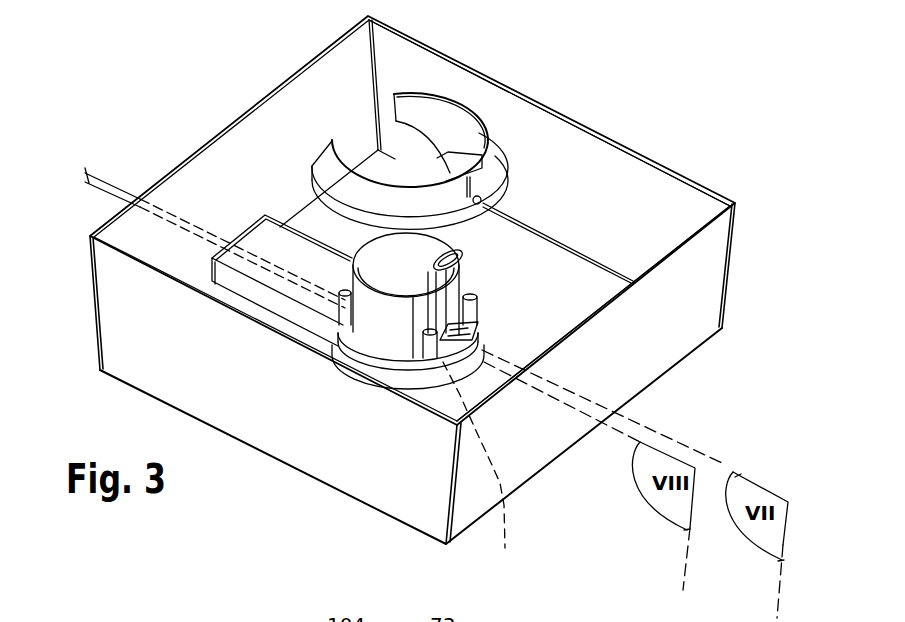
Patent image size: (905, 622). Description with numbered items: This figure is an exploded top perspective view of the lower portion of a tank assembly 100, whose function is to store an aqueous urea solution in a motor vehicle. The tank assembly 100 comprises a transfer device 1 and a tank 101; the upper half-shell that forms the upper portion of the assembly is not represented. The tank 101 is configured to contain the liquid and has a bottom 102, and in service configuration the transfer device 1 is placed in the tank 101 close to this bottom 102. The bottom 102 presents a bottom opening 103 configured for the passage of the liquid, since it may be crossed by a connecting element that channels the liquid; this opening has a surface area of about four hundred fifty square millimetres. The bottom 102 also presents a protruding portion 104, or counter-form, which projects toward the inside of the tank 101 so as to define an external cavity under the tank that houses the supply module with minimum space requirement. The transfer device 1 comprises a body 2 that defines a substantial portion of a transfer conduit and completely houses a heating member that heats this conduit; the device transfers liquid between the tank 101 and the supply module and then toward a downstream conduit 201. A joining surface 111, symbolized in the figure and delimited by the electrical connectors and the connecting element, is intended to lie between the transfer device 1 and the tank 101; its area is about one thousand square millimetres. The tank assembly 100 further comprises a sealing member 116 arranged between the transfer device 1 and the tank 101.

The tank assembly 100 is at (168, 90).
The tank 101 is at (601, 155).
The bottom 102 is at (477, 257).
The bottom opening 103 is at (464, 327).
The protruding portion 104 is at (373, 325).
The joining surface 111 is at (485, 468).
The sealing member 116 is at (565, 268).
The downstream conduit 201 is at (113, 190).
The transfer device 1 is at (492, 103).
The body 2 is at (432, 108).